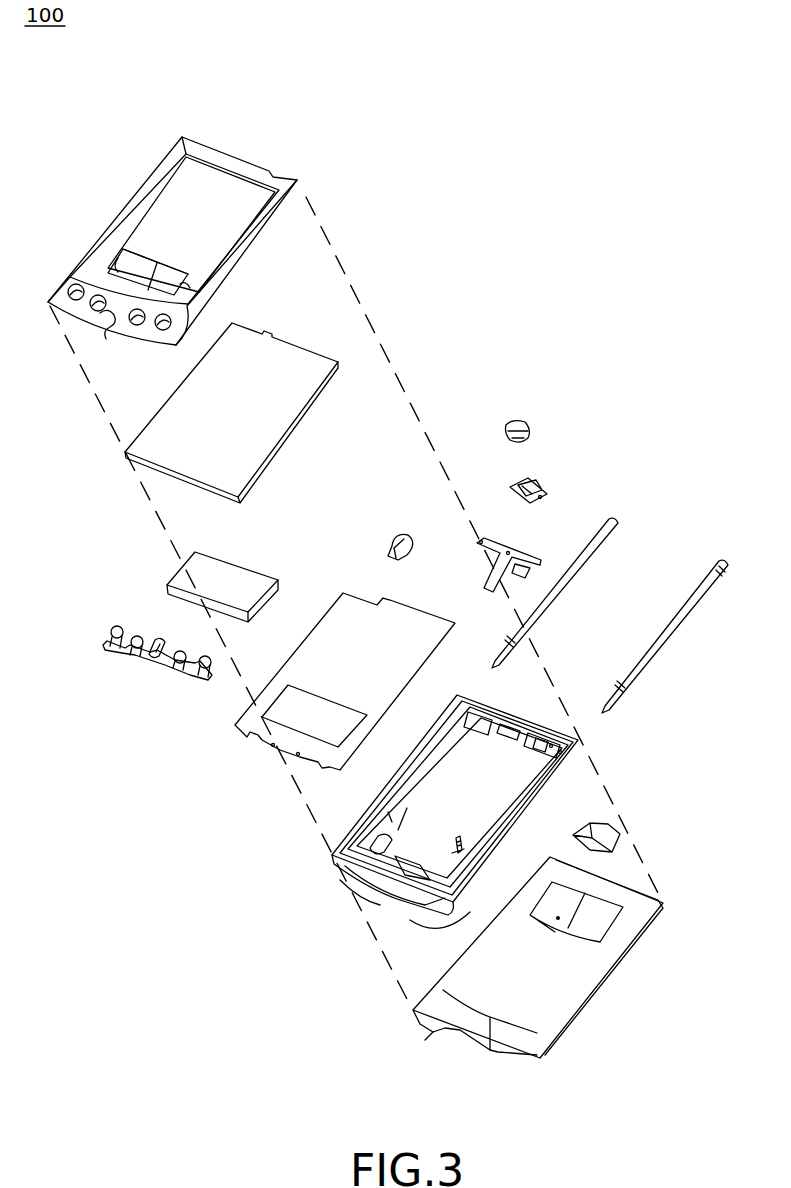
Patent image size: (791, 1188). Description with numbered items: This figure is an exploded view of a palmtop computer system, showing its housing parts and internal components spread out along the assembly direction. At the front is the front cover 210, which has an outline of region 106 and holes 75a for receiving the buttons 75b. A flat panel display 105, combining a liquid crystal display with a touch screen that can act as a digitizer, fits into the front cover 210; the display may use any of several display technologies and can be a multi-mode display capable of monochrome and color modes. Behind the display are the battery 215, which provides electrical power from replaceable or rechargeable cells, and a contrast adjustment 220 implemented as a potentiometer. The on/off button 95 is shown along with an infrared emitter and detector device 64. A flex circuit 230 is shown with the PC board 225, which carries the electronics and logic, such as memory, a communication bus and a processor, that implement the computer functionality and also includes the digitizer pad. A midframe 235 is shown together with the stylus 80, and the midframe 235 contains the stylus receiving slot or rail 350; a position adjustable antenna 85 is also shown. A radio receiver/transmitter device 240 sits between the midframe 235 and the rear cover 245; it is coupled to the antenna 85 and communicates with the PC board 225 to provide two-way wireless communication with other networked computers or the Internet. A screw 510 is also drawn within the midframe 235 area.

The front cover 210 is at (304, 185).
The region 106 is at (124, 260).
The holes 75a is at (70, 287).
The flat panel display 105 is at (298, 346).
The battery 215 is at (182, 565).
The contrast adjustment 220 is at (398, 536).
The buttons 75b is at (112, 630).
The PC board 225 is at (237, 718).
The on/off button 95 is at (528, 426).
The infrared emitter and detector device 64 is at (531, 478).
The flex circuit 230 is at (514, 553).
The position adjustable antenna 85 is at (617, 526).
The stylus 80 is at (708, 603).
The midframe 235 is at (539, 802).
The stylus receiving slot or rail 350 is at (578, 743).
The screw 510 is at (457, 847).
The radio receiver/transmitter device 240 is at (622, 833).
The rear cover 245 is at (598, 993).